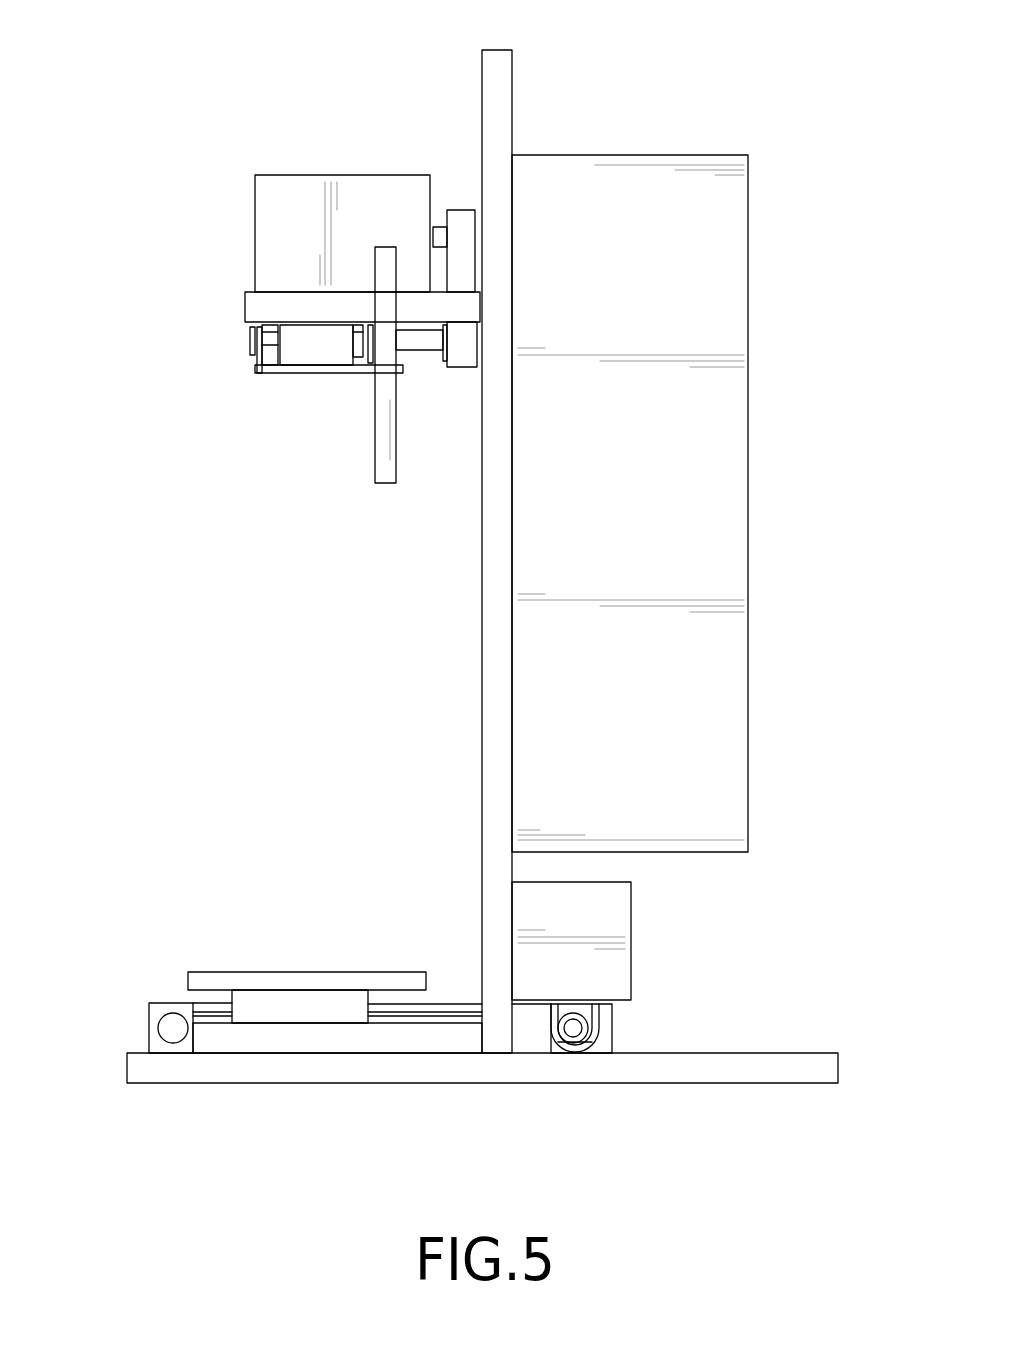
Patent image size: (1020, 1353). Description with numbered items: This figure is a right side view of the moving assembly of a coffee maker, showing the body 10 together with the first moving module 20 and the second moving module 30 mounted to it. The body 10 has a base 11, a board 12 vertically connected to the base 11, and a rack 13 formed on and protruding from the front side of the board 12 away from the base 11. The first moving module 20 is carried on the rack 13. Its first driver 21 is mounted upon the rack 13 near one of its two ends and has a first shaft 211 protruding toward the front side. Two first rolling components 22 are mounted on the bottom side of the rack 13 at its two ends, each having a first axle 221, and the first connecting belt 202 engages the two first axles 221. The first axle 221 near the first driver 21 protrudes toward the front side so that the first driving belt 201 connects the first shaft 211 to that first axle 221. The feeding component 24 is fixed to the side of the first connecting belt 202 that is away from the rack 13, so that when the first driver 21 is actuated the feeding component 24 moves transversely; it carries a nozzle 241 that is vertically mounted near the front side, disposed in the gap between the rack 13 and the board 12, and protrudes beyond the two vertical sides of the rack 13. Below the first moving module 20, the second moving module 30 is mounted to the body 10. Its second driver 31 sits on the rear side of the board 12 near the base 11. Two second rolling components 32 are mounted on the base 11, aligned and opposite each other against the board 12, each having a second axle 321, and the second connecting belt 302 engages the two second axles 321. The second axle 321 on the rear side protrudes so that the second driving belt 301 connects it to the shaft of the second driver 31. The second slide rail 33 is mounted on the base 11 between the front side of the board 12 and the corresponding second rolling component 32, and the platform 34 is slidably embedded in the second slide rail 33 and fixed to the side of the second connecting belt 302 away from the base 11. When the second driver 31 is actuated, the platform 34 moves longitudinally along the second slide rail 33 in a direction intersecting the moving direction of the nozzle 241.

The body 10 is at (537, 82).
The base 11 is at (735, 1073).
The board 12 is at (487, 117).
The rack 13 is at (258, 308).
The first moving module 20 is at (210, 197).
The first driver 21 is at (300, 182).
The first shaft 211 is at (440, 237).
The first rolling components 22 is at (247, 341).
The feeding component 24 is at (262, 372).
The first driving belt 201 is at (465, 353).
The first connecting belt 202 is at (325, 352).
The first axle 221 is at (420, 342).
The nozzle 241 is at (383, 443).
The second moving module 30 is at (200, 922).
The second driver 31 is at (633, 930).
The second rolling components 32 is at (138, 1022).
The second axle 321 is at (173, 1025).
The second slide rail 33 is at (283, 1038).
The platform 34 is at (338, 980).
The second driving belt 301 is at (557, 1047).
The second connecting belt 302 is at (460, 1008).